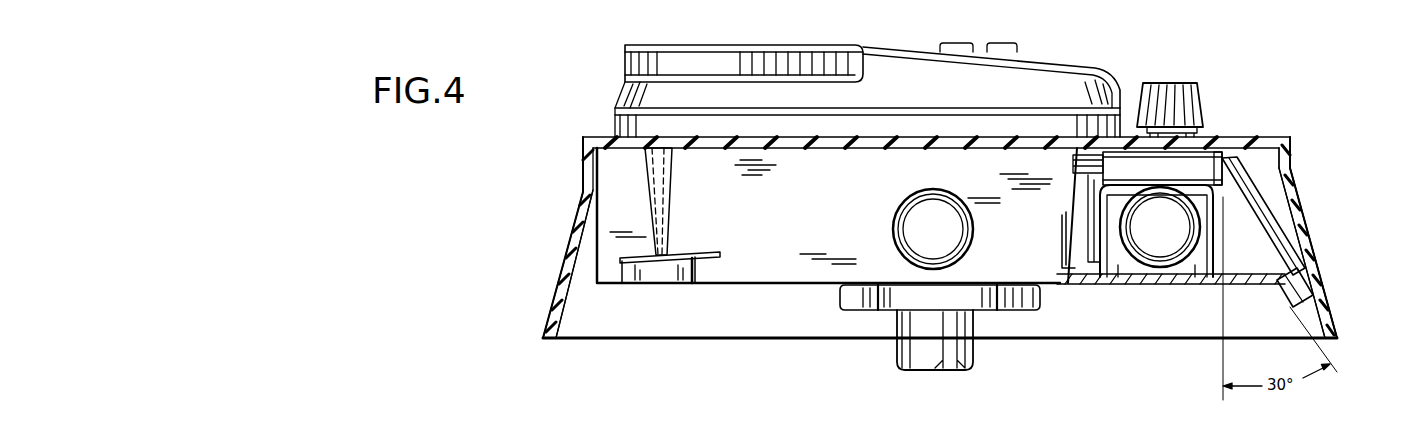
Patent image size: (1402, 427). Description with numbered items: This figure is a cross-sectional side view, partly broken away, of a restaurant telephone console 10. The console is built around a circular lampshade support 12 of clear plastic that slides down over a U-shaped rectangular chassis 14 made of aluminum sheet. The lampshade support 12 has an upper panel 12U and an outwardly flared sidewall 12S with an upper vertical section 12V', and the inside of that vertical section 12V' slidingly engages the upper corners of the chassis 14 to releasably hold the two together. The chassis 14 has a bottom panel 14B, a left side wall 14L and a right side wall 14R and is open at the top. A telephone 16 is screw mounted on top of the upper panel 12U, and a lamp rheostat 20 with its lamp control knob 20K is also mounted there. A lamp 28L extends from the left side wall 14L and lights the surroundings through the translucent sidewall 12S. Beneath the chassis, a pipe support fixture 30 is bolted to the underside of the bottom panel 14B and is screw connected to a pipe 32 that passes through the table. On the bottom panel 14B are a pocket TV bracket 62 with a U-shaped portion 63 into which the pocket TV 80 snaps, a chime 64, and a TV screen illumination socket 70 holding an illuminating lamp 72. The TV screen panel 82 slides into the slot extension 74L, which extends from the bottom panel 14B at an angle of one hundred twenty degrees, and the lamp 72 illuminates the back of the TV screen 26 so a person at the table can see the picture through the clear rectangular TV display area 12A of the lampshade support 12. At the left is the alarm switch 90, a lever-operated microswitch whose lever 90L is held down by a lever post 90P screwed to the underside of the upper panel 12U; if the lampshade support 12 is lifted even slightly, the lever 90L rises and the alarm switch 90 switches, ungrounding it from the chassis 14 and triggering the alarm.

The restaurant telephone console 10 is at (1339, 116).
The circular lampshade support 12 is at (1333, 313).
The upper panel 12U is at (601, 137).
The outwardly flared sidewall 12S is at (576, 208).
The upper vertical section 12V' is at (1315, 154).
The rectangular TV display area 12A is at (1305, 199).
The U-shaped rectangular chassis 14 is at (597, 283).
The left side wall 14L is at (833, 193).
The right side wall 14R is at (1263, 258).
The bottom panel 14B is at (1268, 286).
The telephone 16 is at (622, 72).
The lamp rheostat 20 is at (1214, 105).
The lamp control knob 20K is at (1163, 100).
The TV screen 26 is at (1290, 228).
The lamp 28L is at (926, 192).
The pipe support fixture 30 is at (866, 302).
The pipe 32 is at (975, 348).
The pocket TV bracket 62 is at (1092, 205).
The U-shaped portion 63 is at (1212, 170).
The chime 64 is at (1065, 262).
The TV screen illumination socket 70 is at (1132, 288).
The illuminating lamp 72 is at (1160, 200).
The slot extension 74L is at (1313, 290).
The pocket TV 80 is at (1076, 163).
The TV screen panel 82 is at (1262, 196).
The alarm switch 90 is at (700, 265).
The lever 90L is at (697, 253).
The lever post 90P is at (670, 210).